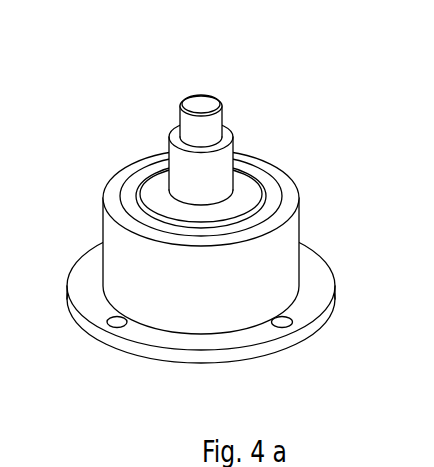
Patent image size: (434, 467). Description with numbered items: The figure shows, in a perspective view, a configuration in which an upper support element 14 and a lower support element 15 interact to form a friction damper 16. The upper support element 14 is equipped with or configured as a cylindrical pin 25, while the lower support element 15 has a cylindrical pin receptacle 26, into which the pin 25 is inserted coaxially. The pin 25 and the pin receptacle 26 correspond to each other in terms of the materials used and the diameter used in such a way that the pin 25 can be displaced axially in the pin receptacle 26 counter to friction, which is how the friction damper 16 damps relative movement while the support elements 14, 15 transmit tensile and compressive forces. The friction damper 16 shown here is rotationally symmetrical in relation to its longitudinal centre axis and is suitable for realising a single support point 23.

The upper support element 14 is at (205, 92).
The lower support element 15 is at (102, 259).
The friction damper 16 is at (190, 184).
The support point 23 is at (298, 147).
The cylindrical pin 25 is at (182, 173).
The cylindrical pin receptacle 26 is at (210, 203).